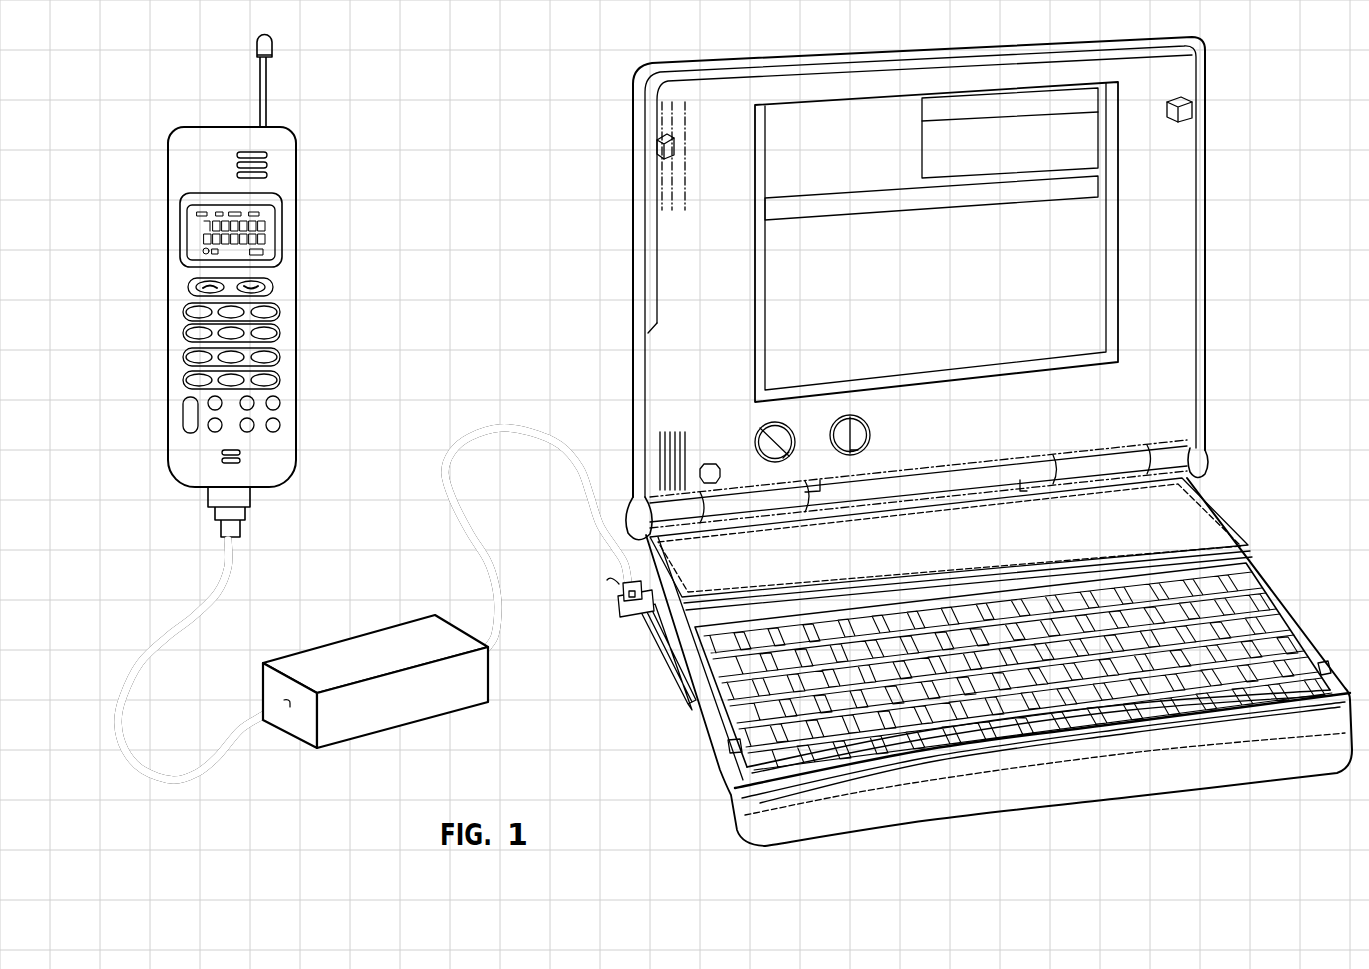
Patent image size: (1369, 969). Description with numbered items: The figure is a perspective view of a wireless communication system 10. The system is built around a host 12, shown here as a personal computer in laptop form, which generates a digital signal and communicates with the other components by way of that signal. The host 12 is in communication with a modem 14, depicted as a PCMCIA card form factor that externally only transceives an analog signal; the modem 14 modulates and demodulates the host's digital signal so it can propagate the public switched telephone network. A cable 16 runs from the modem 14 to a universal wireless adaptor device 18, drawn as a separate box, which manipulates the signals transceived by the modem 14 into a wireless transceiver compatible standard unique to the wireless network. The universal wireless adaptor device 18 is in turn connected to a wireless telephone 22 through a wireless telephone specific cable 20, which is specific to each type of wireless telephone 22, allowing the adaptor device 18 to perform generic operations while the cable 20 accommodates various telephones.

The wireless communication system 10 is at (405, 75).
The host 12 is at (1215, 158).
The modem 14 is at (632, 630).
The cable 16 is at (530, 425).
The universal wireless adaptor device 18 is at (357, 620).
The wireless telephone specific cable 20 is at (185, 612).
The wireless telephone 22 is at (320, 208).